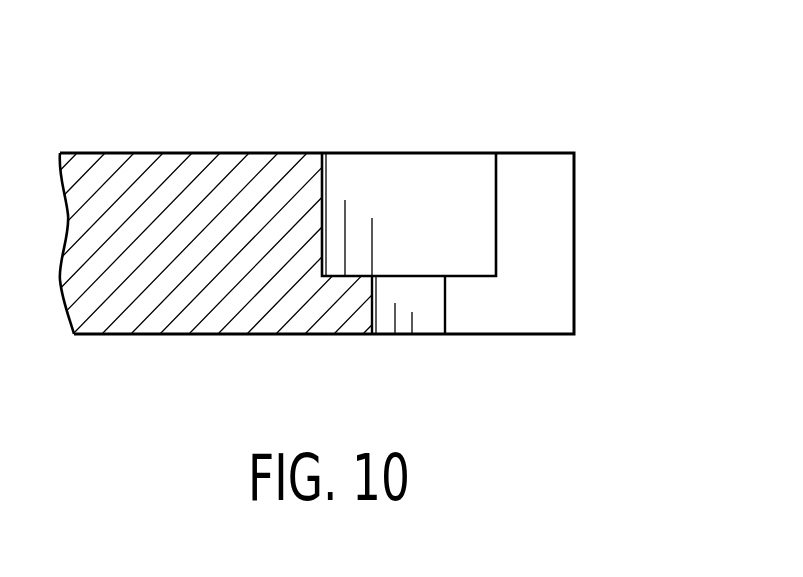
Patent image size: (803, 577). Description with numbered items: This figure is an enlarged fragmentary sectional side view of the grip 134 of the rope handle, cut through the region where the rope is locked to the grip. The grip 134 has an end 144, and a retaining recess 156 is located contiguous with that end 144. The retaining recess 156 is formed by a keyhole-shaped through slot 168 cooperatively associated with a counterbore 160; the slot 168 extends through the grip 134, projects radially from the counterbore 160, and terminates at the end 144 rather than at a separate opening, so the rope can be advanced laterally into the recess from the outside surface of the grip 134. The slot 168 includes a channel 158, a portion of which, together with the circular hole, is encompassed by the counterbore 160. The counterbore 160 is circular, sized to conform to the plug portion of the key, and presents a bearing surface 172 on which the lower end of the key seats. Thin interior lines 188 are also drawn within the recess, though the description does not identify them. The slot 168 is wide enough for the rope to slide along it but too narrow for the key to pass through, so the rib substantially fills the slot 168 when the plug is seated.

The grip 134 is at (208, 337).
The retaining recess 156 is at (528, 175).
The counterbore 160 is at (456, 172).
The bearing surface 172 is at (468, 275).
The vias 188 is at (359, 210).
The keyhole-shaped through slot 168 is at (528, 250).
The end 144 is at (575, 285).
The channel 158 is at (545, 318).